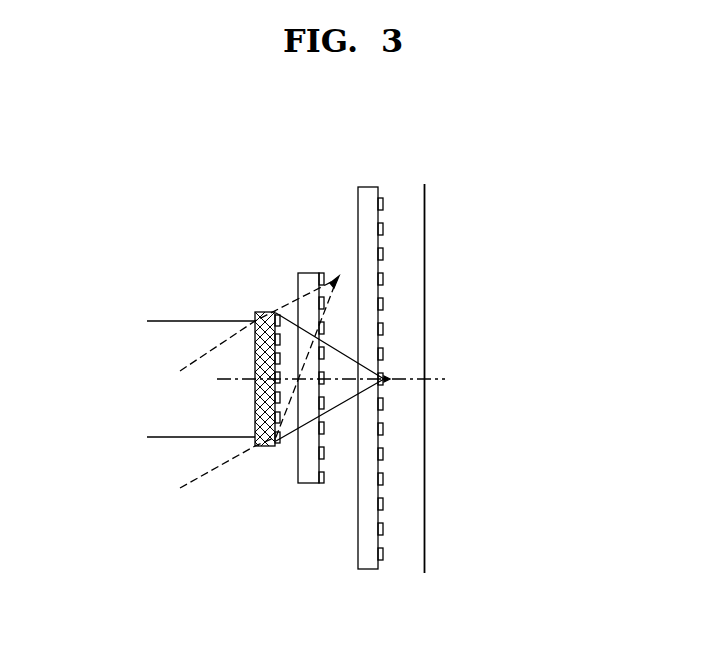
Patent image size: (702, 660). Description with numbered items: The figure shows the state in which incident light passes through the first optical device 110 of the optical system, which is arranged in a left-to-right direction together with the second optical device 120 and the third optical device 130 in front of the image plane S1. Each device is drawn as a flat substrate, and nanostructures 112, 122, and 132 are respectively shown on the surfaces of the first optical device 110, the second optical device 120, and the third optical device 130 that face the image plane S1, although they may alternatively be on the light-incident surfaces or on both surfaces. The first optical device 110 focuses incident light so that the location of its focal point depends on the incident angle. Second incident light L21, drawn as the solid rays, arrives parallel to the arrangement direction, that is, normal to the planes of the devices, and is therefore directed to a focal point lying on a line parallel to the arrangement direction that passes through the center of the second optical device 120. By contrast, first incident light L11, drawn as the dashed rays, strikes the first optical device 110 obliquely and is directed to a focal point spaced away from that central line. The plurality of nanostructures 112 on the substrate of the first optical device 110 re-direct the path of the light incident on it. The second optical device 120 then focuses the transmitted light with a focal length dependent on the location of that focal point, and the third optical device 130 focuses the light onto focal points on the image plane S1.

The first optical device 110 is at (264, 311).
The nanostructures 112 is at (278, 446).
The second optical device 120 is at (309, 271).
The nanostructures 122 is at (323, 486).
The third optical device 130 is at (367, 185).
The nanostructures 132 is at (381, 563).
The image plane S1 is at (425, 200).
The first incident light L11 is at (330, 295).
The second incident light L21 is at (340, 405).